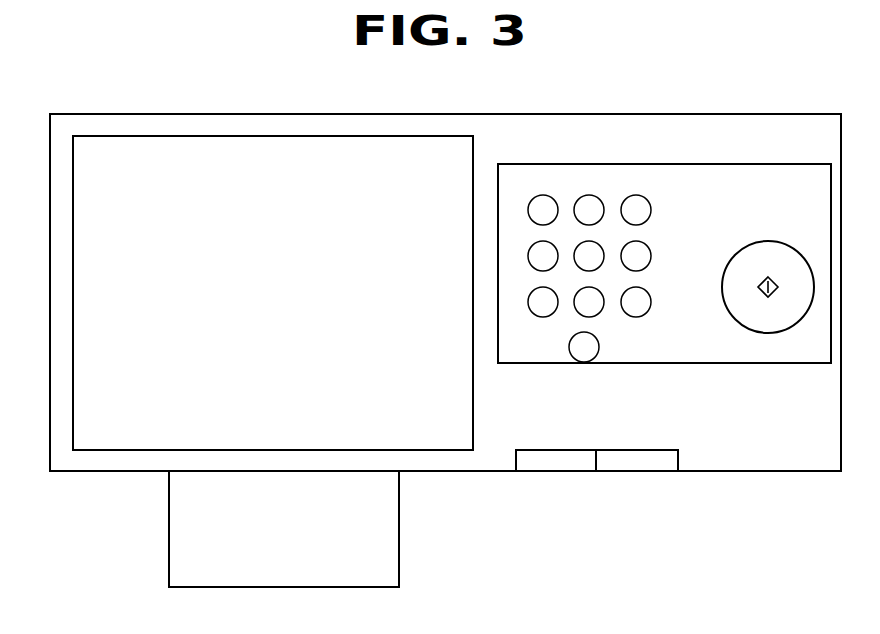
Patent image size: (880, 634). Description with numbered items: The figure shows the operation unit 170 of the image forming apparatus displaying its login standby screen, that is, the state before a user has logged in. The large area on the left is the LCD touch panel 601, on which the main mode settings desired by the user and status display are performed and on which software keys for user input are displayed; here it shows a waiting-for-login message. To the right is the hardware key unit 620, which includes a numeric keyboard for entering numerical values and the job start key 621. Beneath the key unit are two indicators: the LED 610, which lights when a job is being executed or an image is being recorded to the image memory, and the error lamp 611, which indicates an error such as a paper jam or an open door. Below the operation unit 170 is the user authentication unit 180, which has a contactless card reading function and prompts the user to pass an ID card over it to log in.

The operation unit 170 is at (157, 114).
The LCD touch panel 601 is at (440, 136).
The hardware key unit 620 is at (684, 163).
The job start key 621 is at (768, 333).
The LED 610 is at (549, 473).
The error lamp 611 is at (622, 473).
The user authentication unit 180 is at (169, 527).